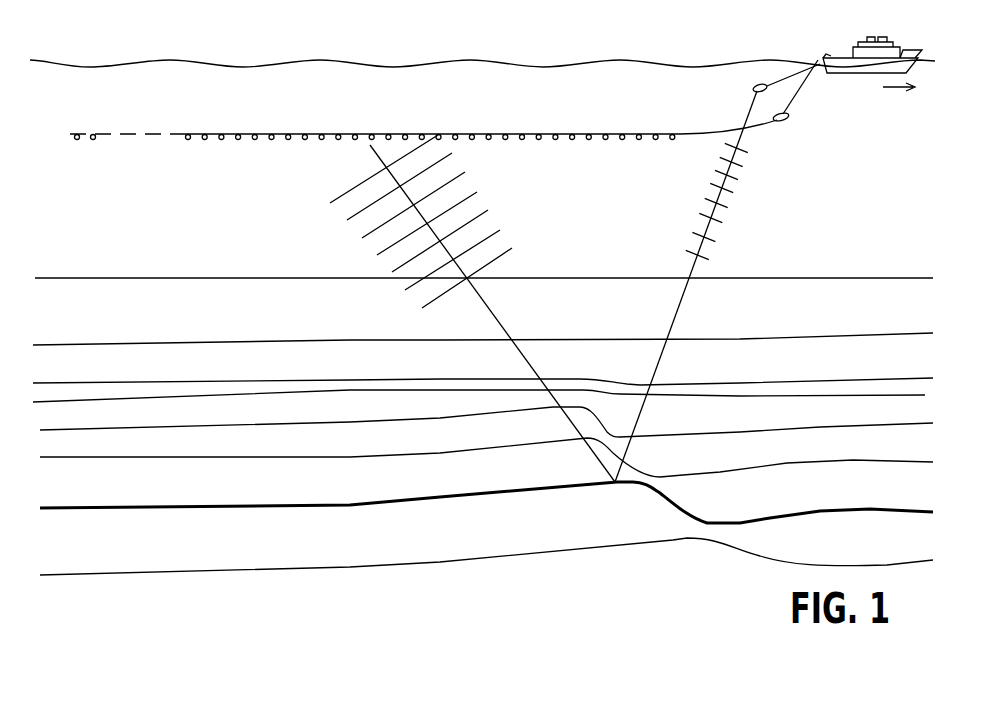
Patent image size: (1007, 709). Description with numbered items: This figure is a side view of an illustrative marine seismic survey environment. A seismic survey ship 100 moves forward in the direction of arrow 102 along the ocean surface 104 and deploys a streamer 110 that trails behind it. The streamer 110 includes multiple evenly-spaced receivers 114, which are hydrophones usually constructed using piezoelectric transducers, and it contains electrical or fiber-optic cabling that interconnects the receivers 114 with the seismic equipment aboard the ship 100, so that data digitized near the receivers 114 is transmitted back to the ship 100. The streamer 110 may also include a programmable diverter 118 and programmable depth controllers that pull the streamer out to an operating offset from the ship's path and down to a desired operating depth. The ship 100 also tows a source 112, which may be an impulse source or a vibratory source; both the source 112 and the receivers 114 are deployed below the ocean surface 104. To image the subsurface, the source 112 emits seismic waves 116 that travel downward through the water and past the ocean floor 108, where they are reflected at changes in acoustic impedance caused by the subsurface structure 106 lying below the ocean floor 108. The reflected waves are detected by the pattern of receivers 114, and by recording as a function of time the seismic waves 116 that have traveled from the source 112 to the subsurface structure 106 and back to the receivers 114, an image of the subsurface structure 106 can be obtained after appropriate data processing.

The ship 100 is at (852, 50).
The arrow 102 is at (900, 105).
The ocean surface 104 is at (522, 67).
The subsurface structure 106 is at (650, 490).
The ocean floor 108 is at (850, 255).
The streamer 110 is at (796, 98).
The source 112 is at (754, 88).
The receivers 114 is at (221, 140).
The seismic waves 116 is at (710, 218).
The programmable diverter 118 is at (785, 123).